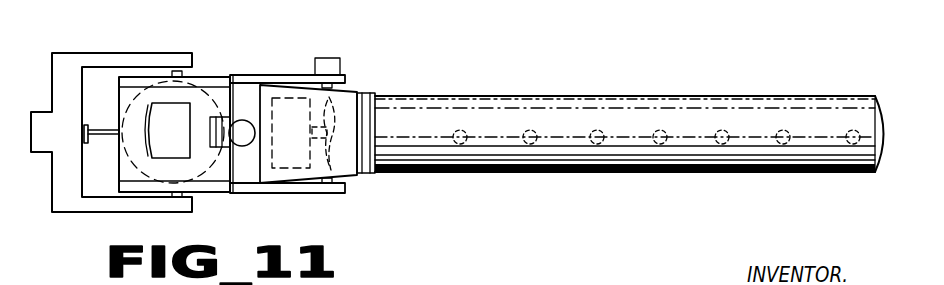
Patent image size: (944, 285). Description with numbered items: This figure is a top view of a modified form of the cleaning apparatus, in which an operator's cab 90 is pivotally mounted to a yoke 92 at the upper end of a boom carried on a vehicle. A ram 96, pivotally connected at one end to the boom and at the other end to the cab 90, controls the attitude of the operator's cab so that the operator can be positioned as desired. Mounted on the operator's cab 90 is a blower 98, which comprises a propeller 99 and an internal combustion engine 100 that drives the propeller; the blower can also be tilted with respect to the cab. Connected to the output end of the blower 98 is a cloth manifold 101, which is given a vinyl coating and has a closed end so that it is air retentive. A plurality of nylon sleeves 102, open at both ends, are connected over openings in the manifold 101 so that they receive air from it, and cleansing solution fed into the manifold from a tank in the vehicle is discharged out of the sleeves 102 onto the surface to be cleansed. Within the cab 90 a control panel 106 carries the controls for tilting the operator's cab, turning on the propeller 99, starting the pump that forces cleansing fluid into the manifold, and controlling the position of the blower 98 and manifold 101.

The operator's cab 90 is at (213, 77).
The yoke 92 is at (115, 53).
The ram 96 is at (86, 144).
The blower 98 is at (353, 92).
The propeller 99 is at (333, 165).
The internal combustion engine 100 is at (285, 167).
The cloth manifold 101 is at (587, 97).
The nylon sleeves 102 is at (532, 130).
The control panel 106 is at (210, 130).